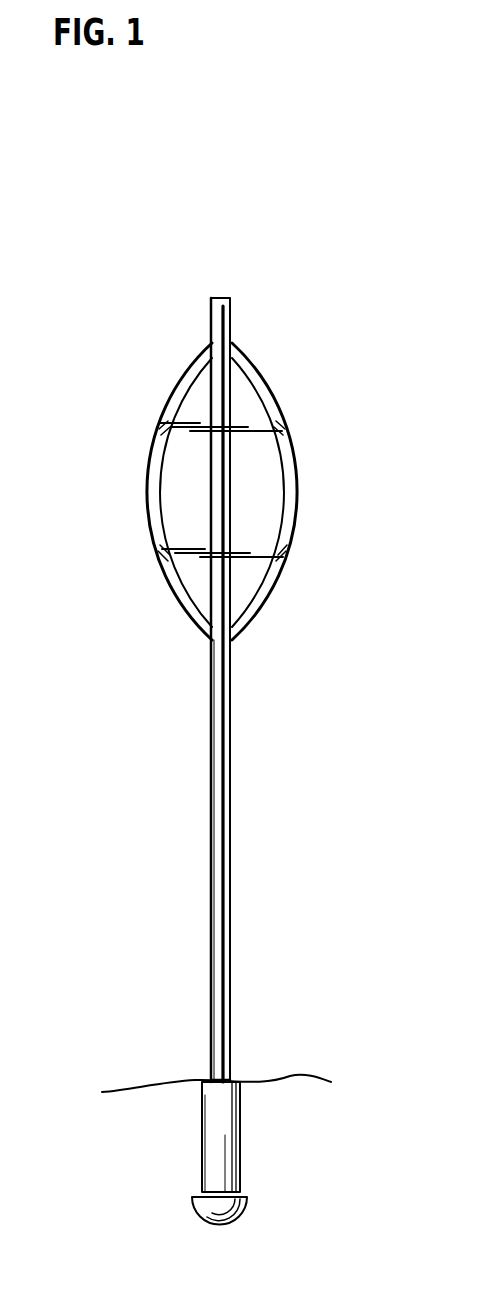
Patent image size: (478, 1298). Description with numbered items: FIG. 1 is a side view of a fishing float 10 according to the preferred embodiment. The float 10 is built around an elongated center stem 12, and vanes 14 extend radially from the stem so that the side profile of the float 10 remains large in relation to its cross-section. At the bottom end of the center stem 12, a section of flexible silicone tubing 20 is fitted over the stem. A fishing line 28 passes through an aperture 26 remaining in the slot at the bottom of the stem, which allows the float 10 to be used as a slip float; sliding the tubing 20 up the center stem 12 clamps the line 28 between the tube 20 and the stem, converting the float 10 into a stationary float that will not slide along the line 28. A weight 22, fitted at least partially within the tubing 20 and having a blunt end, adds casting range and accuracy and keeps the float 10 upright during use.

The float 10 is at (318, 356).
The center stem 12 is at (231, 717).
The vanes 14 is at (275, 481).
The flexible silicone tubing 20 is at (241, 1123).
The weight 22 is at (244, 1211).
The aperture 26 is at (233, 1078).
The fishing line 28 is at (320, 1080).